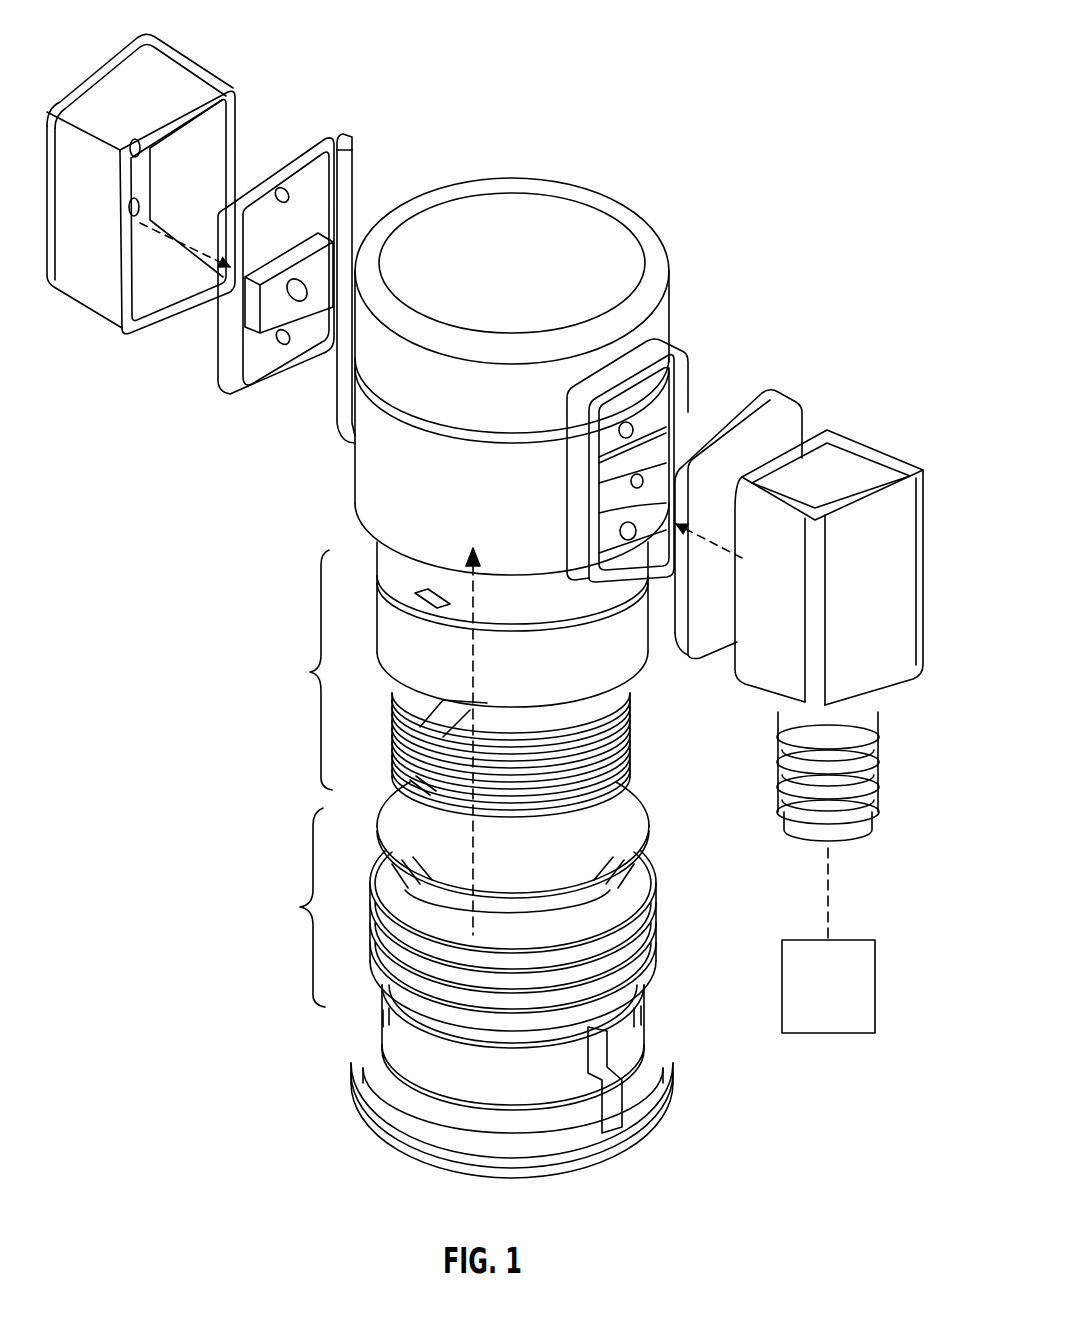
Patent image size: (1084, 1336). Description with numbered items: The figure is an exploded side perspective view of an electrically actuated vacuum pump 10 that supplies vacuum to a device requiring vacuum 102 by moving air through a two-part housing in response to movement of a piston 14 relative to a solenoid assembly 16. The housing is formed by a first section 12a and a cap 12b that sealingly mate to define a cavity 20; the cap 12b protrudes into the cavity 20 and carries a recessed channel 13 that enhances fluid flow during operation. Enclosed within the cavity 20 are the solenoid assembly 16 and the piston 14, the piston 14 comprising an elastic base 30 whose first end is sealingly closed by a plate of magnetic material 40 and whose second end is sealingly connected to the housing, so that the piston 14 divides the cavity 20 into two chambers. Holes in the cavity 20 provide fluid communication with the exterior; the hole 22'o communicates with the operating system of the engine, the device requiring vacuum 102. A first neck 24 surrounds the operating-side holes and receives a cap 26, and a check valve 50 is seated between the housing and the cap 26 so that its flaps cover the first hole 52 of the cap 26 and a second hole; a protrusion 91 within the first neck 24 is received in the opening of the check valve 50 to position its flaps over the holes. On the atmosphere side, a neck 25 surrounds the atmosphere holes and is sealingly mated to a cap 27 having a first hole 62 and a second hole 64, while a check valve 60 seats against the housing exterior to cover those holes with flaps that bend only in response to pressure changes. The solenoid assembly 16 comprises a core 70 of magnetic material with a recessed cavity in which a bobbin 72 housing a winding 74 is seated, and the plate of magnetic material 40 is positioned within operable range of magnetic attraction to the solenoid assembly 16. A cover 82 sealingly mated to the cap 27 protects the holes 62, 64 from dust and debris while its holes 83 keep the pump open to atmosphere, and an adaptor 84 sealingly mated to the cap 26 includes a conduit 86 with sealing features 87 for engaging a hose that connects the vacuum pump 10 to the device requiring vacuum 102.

The electrically actuated vacuum pump 10 is at (742, 112).
The first section 12a is at (557, 205).
The cap 12b is at (655, 1110).
The channel 13 is at (606, 1113).
The piston 14 is at (294, 907).
The solenoid assembly 16 is at (304, 670).
The cavity 20 is at (345, 527).
The hole 22'o is at (686, 402).
The first neck 24 is at (682, 357).
The neck 25 is at (336, 424).
The cap 26 is at (790, 418).
The cap 27 is at (350, 202).
The elastic base 30 is at (655, 912).
The plate of magnetic material 40 is at (648, 828).
The check valve 50 is at (625, 543).
The first hole 52 is at (740, 492).
The check valve 60 is at (324, 368).
The first hole 62 is at (290, 194).
The second hole 64 is at (276, 341).
The core 70 is at (560, 681).
The bobbin 72 is at (613, 702).
The winding 74 is at (398, 763).
The cover 82 is at (163, 63).
The holes 83 is at (140, 150).
The adaptor 84 is at (905, 490).
The conduit 86 is at (807, 826).
The sealing features 87 is at (896, 791).
The protrusion 91 is at (600, 514).
The device requiring vacuum 102 is at (782, 985).